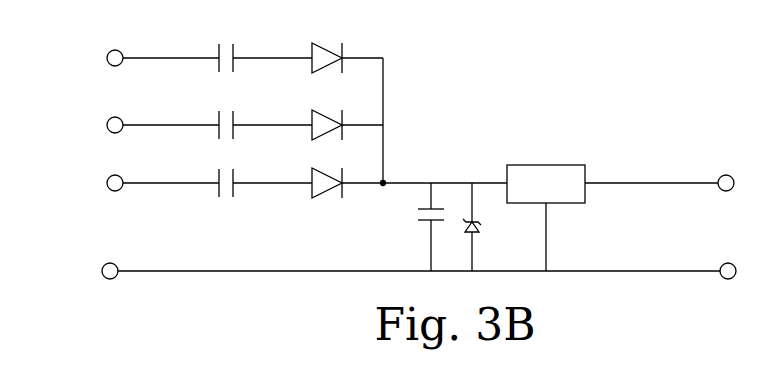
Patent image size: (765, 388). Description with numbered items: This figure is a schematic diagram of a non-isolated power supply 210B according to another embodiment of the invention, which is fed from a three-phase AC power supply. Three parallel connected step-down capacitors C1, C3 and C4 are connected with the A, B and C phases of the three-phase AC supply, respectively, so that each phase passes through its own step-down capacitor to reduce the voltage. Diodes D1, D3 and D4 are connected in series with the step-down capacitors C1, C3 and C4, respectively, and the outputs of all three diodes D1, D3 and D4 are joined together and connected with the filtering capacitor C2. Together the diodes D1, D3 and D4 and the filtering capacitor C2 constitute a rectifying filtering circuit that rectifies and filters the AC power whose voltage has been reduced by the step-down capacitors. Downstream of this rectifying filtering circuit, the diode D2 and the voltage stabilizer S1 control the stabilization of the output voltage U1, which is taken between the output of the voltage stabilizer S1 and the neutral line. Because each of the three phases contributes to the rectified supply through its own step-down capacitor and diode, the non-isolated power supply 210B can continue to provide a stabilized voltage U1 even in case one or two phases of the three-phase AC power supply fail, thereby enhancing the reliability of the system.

The non-isolated power supply 210B is at (396, 153).
The step-down capacitor C1 is at (212, 172).
The filtering capacitor C2 is at (416, 227).
The step-down capacitor C3 is at (212, 114).
The step-down capacitor C4 is at (212, 47).
The diode D1 is at (327, 173).
The diode D2 is at (485, 227).
The diode D3 is at (327, 115).
The diode D4 is at (327, 48).
The voltage stabilizer S1 is at (546, 207).
The output voltage U1 is at (738, 227).